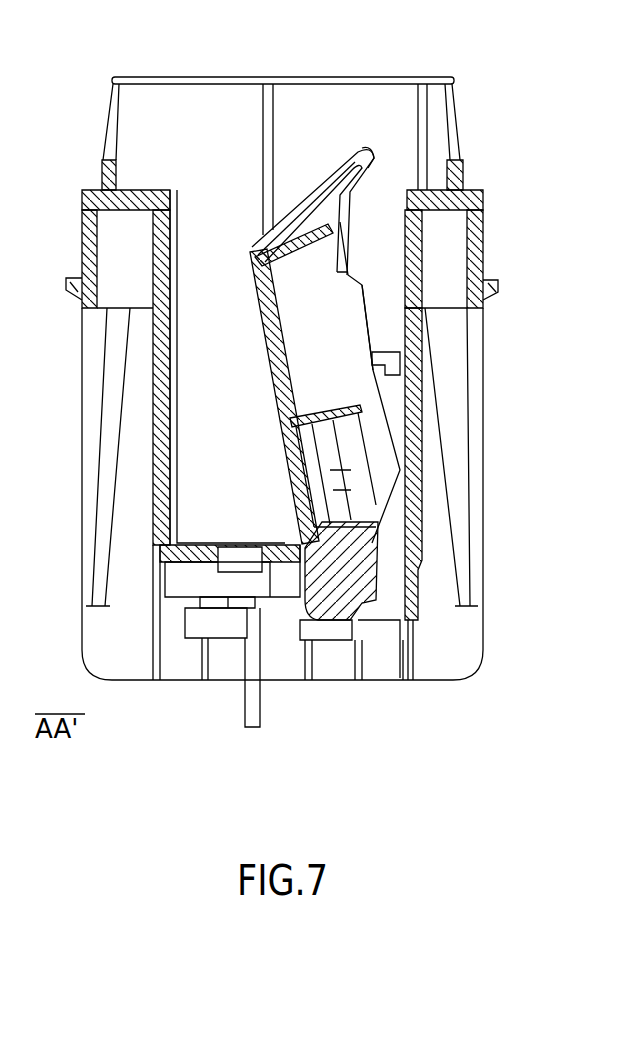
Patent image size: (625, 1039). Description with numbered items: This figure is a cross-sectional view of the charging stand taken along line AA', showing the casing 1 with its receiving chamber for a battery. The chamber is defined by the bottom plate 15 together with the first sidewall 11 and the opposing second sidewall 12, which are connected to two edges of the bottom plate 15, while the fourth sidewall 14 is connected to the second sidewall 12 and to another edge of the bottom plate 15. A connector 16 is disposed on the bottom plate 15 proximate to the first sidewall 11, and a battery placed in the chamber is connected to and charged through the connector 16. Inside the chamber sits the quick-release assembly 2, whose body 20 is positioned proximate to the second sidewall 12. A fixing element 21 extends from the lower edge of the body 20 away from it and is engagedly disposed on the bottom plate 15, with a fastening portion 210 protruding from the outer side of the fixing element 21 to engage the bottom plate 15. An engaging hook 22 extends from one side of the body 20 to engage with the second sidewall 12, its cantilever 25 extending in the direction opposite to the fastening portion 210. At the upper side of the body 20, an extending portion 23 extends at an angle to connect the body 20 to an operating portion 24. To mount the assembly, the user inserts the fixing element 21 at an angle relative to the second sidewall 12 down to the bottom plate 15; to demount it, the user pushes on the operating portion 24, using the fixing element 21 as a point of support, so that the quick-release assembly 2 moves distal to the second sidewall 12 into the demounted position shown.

The casing 1 is at (461, 104).
The quick-release assembly 2 is at (395, 286).
The first sidewall 11 is at (160, 356).
The second sidewall 12 is at (412, 428).
The fourth sidewall 14 is at (200, 405).
The bottom plate 15 is at (285, 606).
The connector 16 is at (220, 606).
The body 20 is at (280, 347).
The fixing element 21 is at (368, 602).
The engaging hook 22 is at (402, 394).
The extending portion 23 is at (292, 210).
The operating portion 24 is at (363, 147).
The cantilever 25 is at (412, 360).
The fastening portion 210 is at (322, 612).